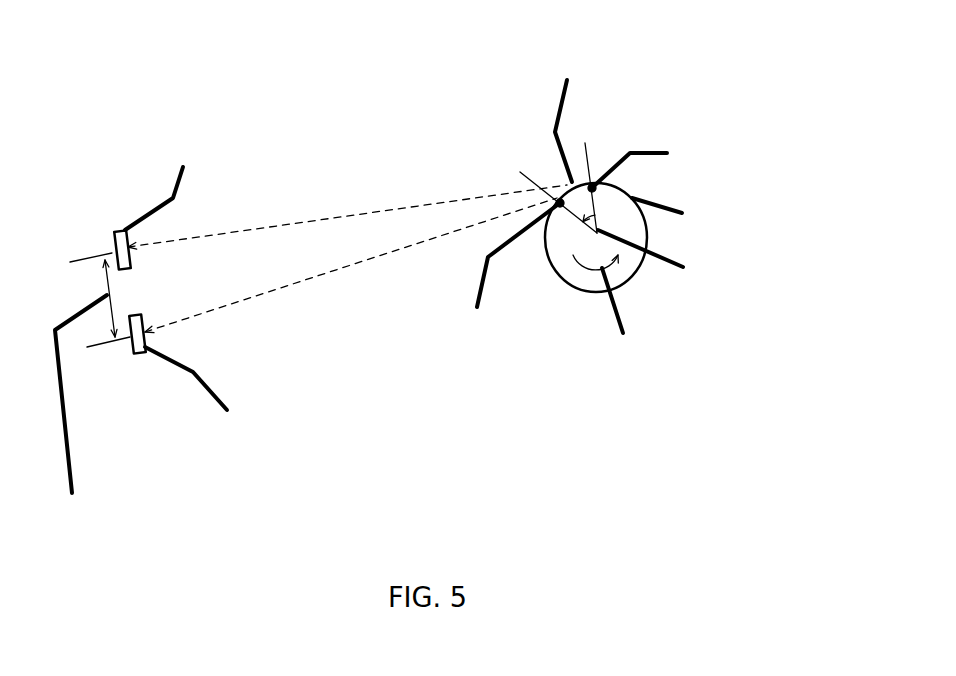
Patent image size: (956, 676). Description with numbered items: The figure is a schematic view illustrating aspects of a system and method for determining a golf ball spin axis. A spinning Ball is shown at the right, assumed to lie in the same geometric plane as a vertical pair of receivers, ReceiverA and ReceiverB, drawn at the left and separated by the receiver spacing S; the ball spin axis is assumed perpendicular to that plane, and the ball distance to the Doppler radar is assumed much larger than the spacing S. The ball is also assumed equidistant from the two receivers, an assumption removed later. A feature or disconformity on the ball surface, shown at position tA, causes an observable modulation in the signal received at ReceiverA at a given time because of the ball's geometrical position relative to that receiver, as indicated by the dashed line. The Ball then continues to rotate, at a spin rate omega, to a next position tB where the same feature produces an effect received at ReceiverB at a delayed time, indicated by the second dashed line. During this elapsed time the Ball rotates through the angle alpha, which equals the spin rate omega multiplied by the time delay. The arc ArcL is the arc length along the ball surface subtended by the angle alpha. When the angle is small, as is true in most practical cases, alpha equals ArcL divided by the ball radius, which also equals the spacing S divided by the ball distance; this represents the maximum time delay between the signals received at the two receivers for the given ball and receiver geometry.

The first receiver ReceiverA is at (318, 200).
The second receiver ReceiverB is at (322, 324).
The receiver spacing S is at (177, 396).
The golf ball Ball is at (641, 237).
The arc length ArcL is at (566, 111).
The ball feature at first time tA is at (700, 171).
The ball feature at delayed time tB is at (512, 283).
The angle alpha is at (685, 247).
The ball spin rate omega is at (644, 329).